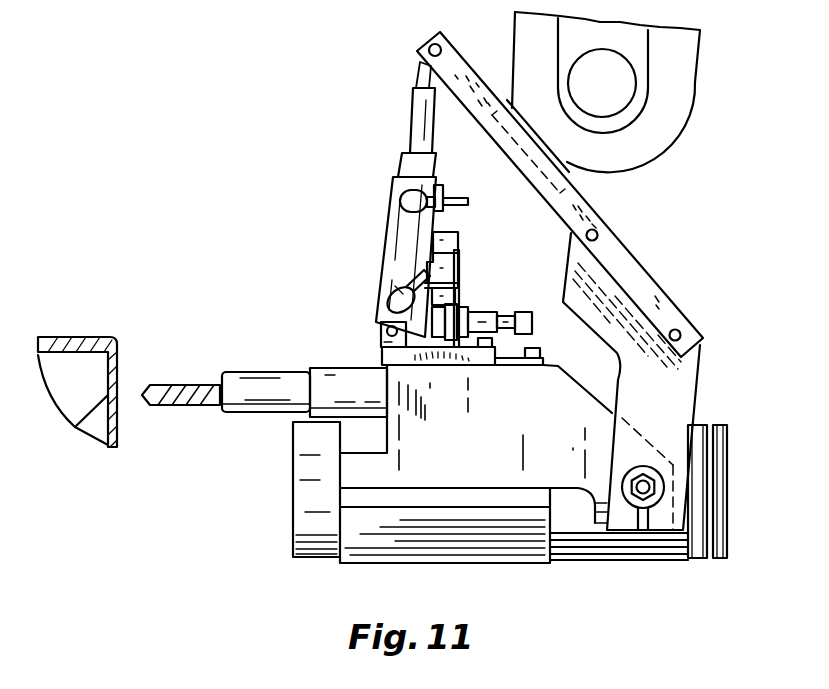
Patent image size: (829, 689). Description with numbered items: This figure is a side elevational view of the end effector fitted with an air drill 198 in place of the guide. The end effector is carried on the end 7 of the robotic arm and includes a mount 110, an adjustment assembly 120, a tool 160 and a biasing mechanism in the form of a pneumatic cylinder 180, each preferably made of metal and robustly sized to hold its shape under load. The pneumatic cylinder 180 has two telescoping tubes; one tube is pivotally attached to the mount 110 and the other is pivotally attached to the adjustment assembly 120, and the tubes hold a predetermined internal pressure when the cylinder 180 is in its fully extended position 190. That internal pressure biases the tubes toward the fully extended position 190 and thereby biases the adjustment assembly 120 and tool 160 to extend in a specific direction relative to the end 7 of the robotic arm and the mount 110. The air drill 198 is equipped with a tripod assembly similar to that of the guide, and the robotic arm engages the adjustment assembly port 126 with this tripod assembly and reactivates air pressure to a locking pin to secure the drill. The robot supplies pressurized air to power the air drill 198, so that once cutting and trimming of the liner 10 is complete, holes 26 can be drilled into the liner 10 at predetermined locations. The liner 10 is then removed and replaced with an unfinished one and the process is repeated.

The end of the robotic arm 7 is at (657, 120).
The liner 10 is at (95, 340).
The holes 26 is at (75, 428).
The mount 110 is at (630, 273).
The adjustment assembly 120 is at (485, 455).
The adjustment assembly port 126 is at (385, 378).
The tool 160 is at (293, 483).
The pneumatic cylinder 180 is at (395, 228).
The fully extended position 190 is at (388, 182).
The air drill 198 is at (247, 378).